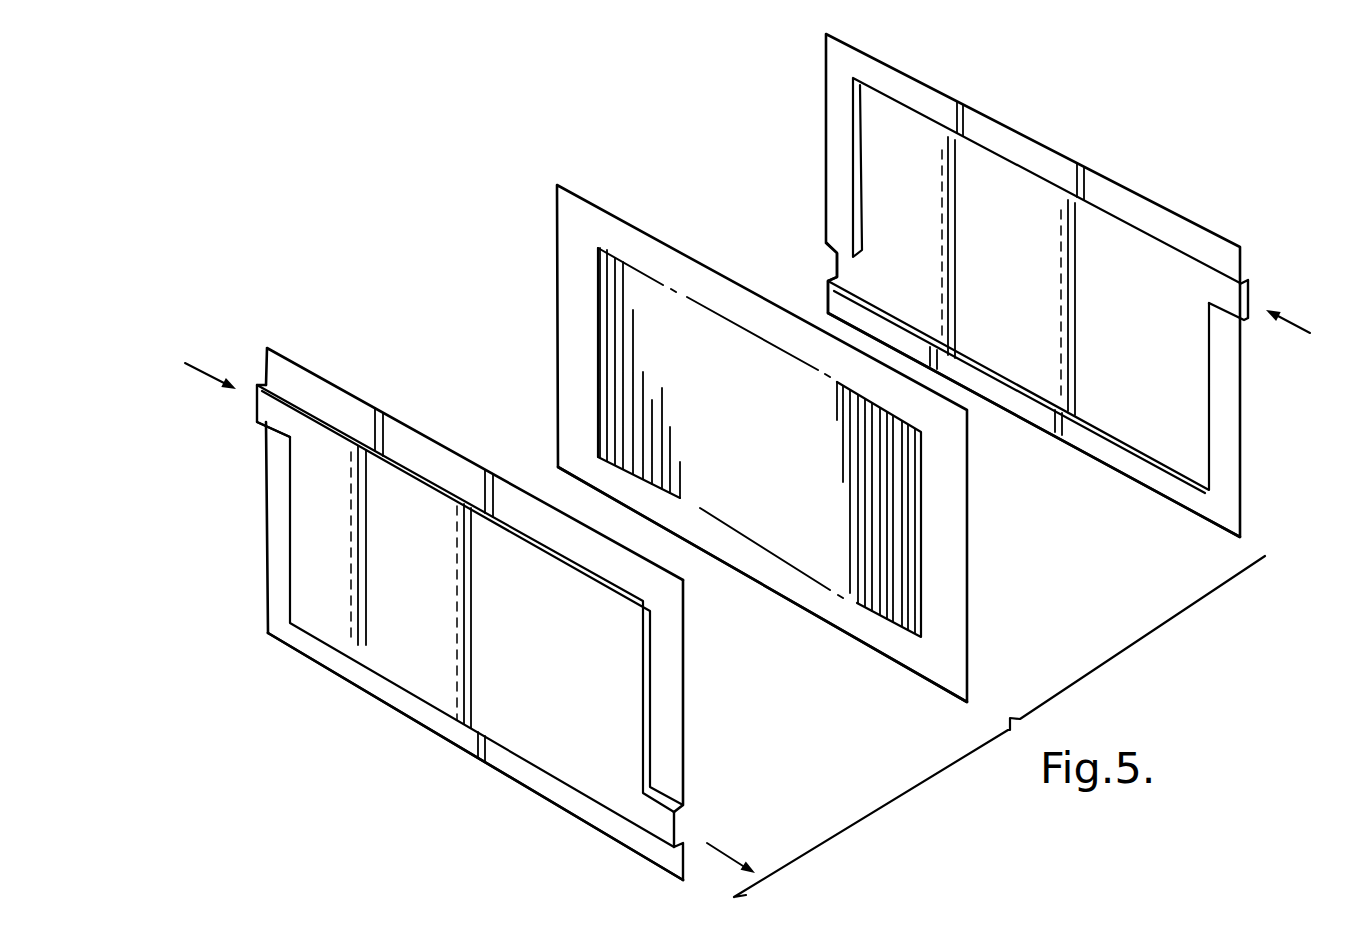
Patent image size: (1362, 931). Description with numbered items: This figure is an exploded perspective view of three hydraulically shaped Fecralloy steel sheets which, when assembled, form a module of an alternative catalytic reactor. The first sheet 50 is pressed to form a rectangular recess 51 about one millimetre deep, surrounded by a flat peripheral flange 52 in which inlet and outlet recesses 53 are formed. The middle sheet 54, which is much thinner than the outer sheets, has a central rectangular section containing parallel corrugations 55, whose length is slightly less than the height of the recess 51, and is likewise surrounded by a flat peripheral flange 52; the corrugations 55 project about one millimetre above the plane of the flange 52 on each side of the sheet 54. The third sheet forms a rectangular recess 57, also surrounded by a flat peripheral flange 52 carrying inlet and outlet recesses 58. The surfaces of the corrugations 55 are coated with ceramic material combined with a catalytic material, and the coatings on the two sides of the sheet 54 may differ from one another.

The first sheet 50 is at (684, 745).
The rectangular recess 51 is at (360, 618).
The flat peripheral flange 52 is at (410, 702).
The inlet and outlet recesses 53 is at (283, 418).
The middle sheet 54 is at (946, 618).
The parallel corrugations 55 is at (908, 508).
The rectangular recess 57 is at (885, 152).
The inlet and outlet recesses 58 is at (830, 100).